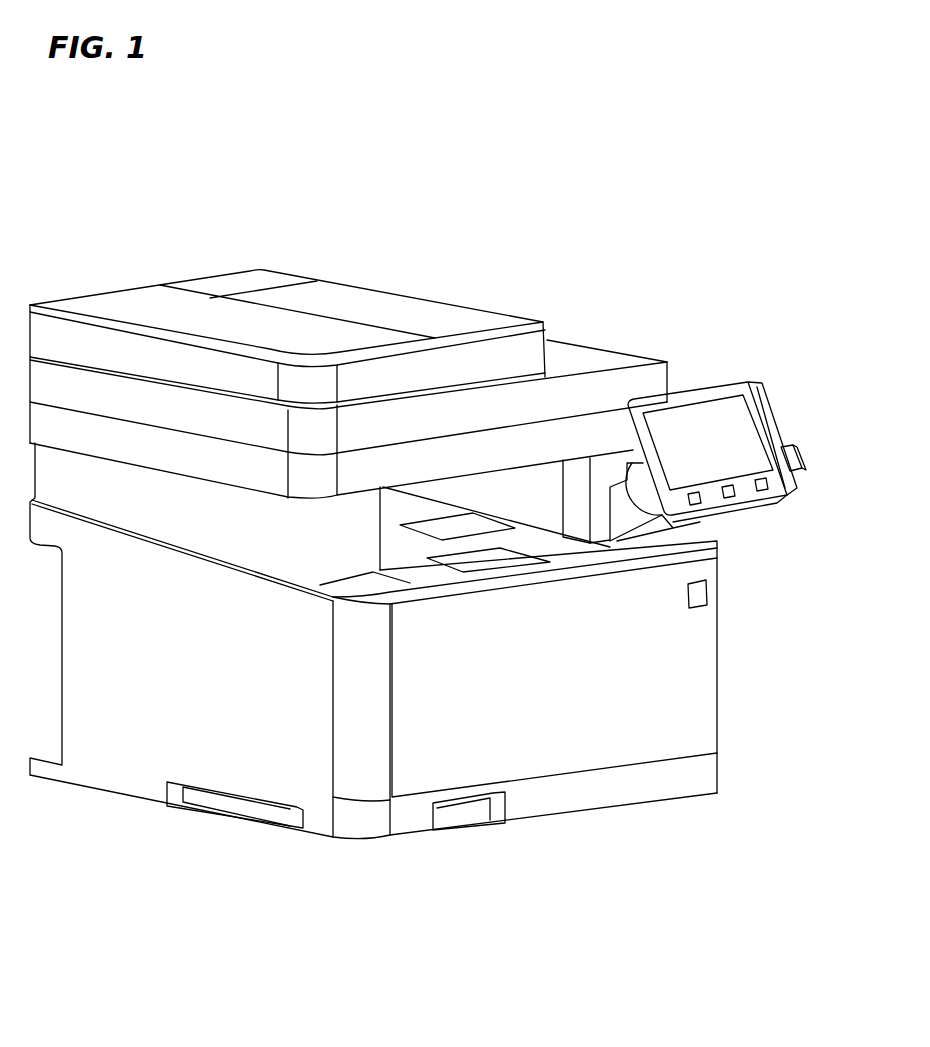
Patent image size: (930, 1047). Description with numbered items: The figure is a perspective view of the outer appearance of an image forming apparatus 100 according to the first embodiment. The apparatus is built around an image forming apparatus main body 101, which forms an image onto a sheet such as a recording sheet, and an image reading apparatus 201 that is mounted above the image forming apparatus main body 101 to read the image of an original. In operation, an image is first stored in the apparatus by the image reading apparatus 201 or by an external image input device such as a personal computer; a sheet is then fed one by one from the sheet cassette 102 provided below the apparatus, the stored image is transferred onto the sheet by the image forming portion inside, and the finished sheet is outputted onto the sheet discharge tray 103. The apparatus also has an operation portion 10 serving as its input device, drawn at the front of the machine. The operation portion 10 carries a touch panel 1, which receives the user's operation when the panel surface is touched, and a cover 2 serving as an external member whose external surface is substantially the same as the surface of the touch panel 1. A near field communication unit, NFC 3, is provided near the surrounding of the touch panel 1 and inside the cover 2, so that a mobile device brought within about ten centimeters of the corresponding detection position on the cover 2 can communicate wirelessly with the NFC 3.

The image forming apparatus 100 is at (601, 322).
The image reading apparatus 201 is at (411, 313).
The sheet discharge tray 103 is at (408, 551).
The image forming apparatus main body 101 is at (568, 715).
The sheet cassette 102 is at (661, 788).
The touch panel 1 is at (722, 429).
The operation portion 10 is at (703, 398).
The cover 2 is at (769, 402).
The near field communication unit (NFC) 3 is at (795, 450).